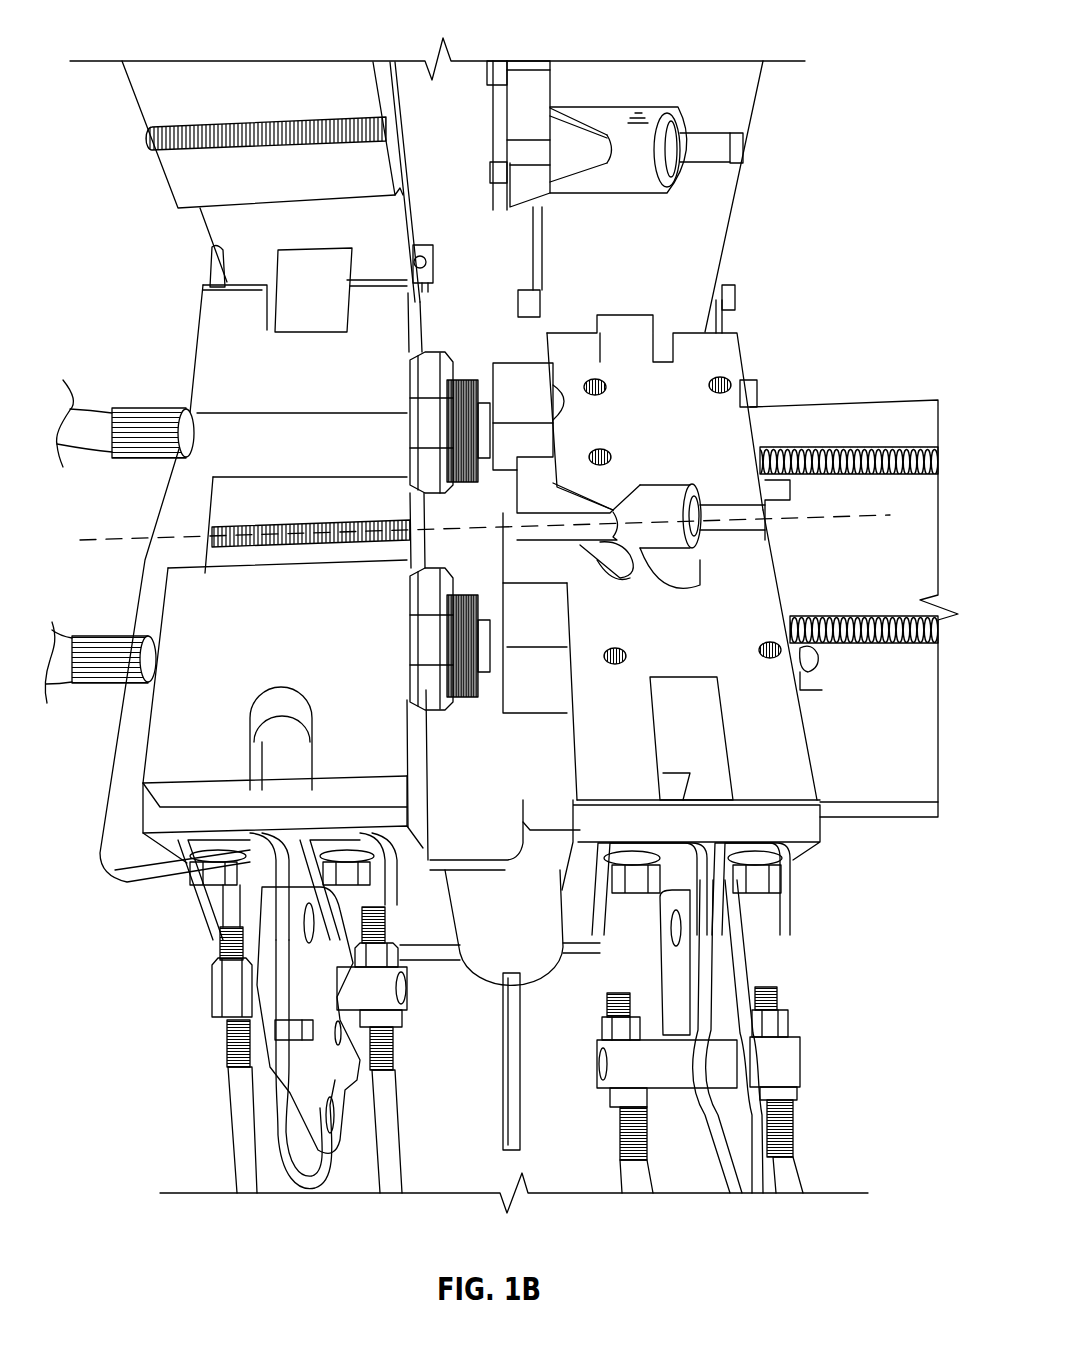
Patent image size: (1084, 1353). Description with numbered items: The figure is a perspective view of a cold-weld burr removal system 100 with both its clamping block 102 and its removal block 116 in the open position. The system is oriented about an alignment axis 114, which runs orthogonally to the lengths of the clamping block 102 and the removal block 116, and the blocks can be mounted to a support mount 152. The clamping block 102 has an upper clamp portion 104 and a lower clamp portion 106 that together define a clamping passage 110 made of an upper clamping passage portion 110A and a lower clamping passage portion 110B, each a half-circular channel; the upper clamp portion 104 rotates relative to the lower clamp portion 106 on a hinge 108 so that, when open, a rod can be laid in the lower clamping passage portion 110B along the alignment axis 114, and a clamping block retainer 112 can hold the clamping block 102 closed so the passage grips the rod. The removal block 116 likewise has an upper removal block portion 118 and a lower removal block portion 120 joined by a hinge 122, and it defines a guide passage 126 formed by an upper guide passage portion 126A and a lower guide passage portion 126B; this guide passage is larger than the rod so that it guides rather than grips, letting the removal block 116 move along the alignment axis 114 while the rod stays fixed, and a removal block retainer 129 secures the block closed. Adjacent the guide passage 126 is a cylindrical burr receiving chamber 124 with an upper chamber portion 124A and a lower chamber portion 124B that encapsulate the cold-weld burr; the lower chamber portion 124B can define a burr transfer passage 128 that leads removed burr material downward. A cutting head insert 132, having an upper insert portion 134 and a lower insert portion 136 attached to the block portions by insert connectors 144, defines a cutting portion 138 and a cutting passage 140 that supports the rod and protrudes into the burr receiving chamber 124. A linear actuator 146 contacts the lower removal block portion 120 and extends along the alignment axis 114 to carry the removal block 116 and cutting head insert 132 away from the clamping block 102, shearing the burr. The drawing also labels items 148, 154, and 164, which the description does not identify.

The cold-weld burr removal system 100 is at (134, 28).
The clamping block 102 is at (225, 715).
The upper clamp portion 104 is at (165, 88).
The lower clamp portion 106 is at (180, 695).
The hinge 108 is at (318, 268).
The clamping passage 110 is at (290, 547).
The upper clamping passage portion 110A is at (160, 145).
The lower clamping passage portion 110B is at (218, 548).
The clamping block retainer 112 is at (263, 1063).
The alignment axis 114 is at (107, 543).
The removal block 116 is at (783, 728).
The upper removal block portion 118 is at (727, 87).
The lower removal block portion 120 is at (723, 662).
The hinge 122 is at (630, 338).
The burr receiving chamber 124 is at (640, 180).
The upper chamber portion 124A is at (617, 183).
The lower chamber portion 124B is at (687, 562).
The guide passage 126 is at (770, 527).
The upper guide passage portion 126A is at (740, 167).
The lower guide passage portion 126B is at (753, 535).
The burr transfer passage 128 is at (640, 537).
The removal block retainer 129 is at (733, 937).
The cutting head insert 132 is at (543, 463).
The upper insert portion 134 is at (527, 182).
The lower insert portion 136 is at (540, 557).
The cutting portion 138 is at (597, 510).
The cutting passage 140 is at (585, 568).
The insert connectors 144 is at (490, 80).
The linear actuator 146 is at (487, 408).
The knob 148 is at (148, 423).
The support mount 152 is at (863, 810).
The spring 154 is at (862, 447).
The column 164 is at (567, 757).